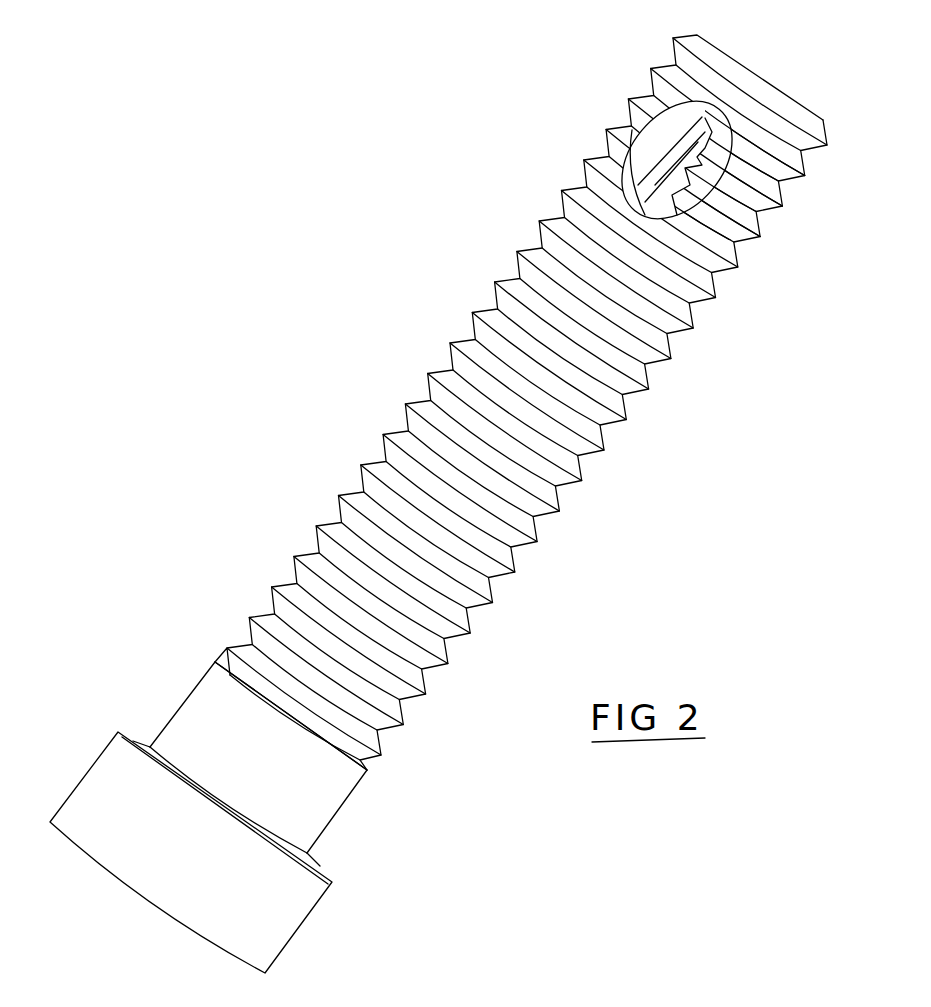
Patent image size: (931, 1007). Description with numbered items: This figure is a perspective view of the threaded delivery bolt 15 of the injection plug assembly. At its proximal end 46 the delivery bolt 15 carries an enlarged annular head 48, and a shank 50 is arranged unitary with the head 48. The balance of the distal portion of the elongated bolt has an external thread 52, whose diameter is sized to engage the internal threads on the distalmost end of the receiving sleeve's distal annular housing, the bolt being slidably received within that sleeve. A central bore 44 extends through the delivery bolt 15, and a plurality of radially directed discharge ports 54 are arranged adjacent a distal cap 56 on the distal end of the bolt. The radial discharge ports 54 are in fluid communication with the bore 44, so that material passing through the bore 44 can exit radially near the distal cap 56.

The threaded delivery bolt 15 is at (298, 477).
The central bore 44 is at (630, 131).
The proximal end 46 is at (140, 740).
The enlarged annular head 48 is at (92, 775).
The shank 50 is at (335, 810).
The external thread 52 is at (403, 393).
The radially directed discharge ports 54 is at (652, 104).
The distal cap 56 is at (748, 66).